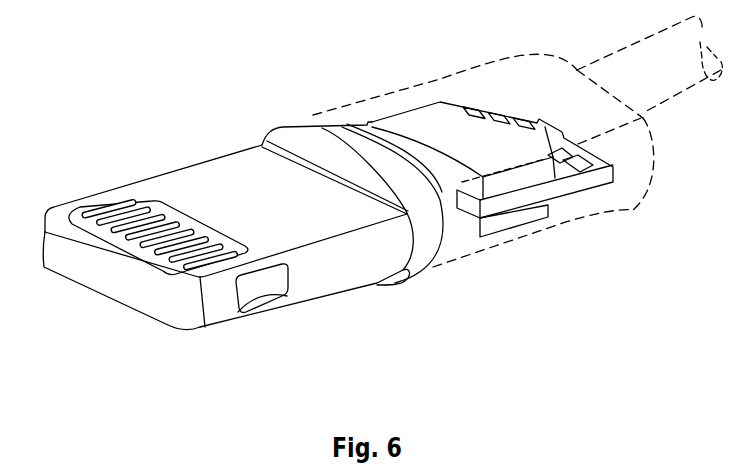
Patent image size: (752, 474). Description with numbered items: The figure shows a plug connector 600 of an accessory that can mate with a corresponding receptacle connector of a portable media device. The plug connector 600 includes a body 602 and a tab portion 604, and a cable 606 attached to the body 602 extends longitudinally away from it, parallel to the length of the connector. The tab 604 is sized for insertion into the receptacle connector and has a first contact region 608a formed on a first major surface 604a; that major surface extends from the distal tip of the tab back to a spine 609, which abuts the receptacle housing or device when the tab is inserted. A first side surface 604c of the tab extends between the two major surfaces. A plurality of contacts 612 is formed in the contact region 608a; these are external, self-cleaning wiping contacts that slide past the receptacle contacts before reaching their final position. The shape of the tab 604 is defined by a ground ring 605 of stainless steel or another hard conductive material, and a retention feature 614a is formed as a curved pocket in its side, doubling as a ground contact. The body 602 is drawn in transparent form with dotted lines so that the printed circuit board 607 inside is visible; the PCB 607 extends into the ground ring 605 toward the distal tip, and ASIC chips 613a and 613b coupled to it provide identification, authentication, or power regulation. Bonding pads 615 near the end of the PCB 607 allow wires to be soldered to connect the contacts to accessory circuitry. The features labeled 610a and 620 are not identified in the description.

The plug connector 600 is at (183, 58).
The body 602 is at (525, 180).
The tab portion 604 is at (240, 138).
The first major surface 604a is at (226, 211).
The first side surface 604c is at (339, 280).
The ground ring 605 is at (63, 267).
The cable 606 is at (517, 141).
The printed circuit board (PCB) 607 is at (587, 190).
The first contact region 608a is at (205, 327).
The spine 609 is at (303, 128).
The side region of plug body 610a is at (330, 218).
The contacts 612 is at (168, 223).
The ASIC chip 613a is at (433, 117).
The ASIC chip 613b is at (500, 232).
The retention feature 614a is at (268, 297).
The bonding pads 615 is at (573, 152).
The lower edge of plug body 620 is at (153, 303).